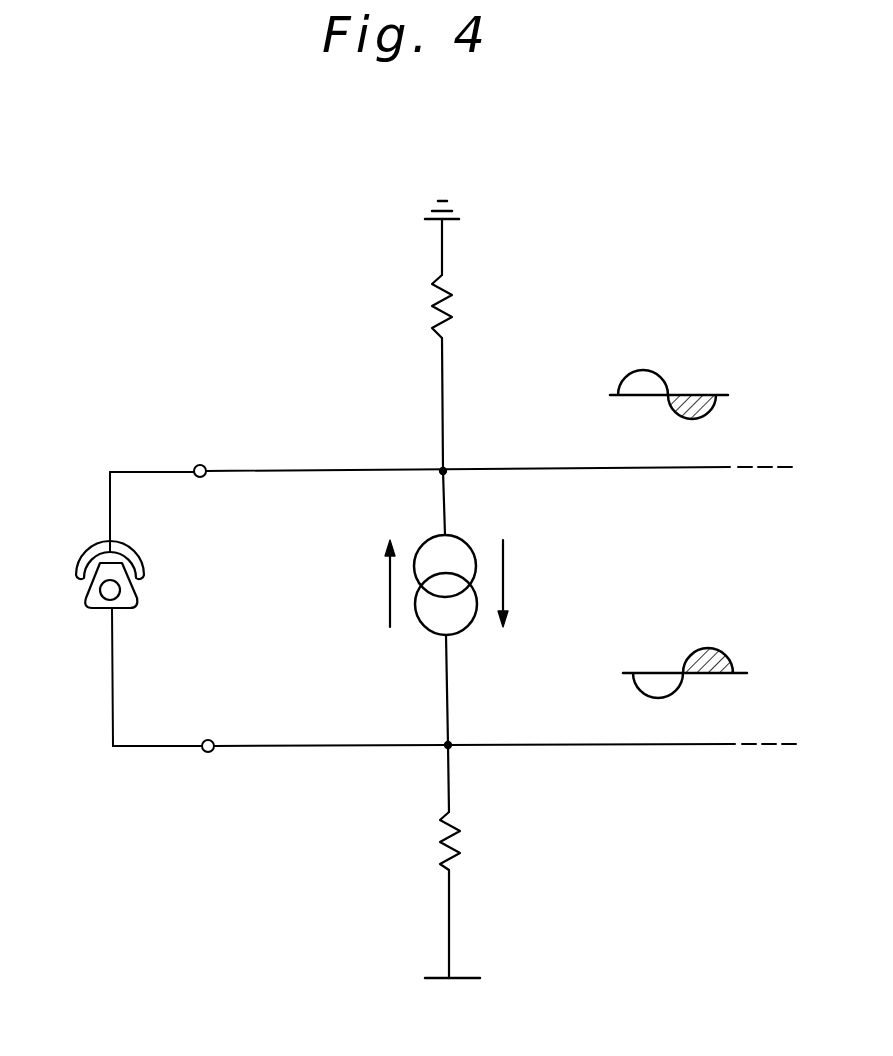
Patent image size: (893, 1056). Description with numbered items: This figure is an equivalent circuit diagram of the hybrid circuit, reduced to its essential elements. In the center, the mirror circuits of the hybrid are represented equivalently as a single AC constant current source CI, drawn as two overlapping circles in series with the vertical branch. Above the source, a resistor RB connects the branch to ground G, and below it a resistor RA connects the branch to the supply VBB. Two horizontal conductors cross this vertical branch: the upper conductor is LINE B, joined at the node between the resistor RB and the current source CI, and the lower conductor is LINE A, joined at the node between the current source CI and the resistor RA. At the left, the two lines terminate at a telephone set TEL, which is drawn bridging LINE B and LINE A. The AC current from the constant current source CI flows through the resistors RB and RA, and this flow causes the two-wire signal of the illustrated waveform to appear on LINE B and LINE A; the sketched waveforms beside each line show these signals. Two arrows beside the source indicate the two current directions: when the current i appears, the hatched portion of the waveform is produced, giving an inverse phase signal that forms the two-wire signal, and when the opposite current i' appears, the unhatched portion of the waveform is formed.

The ground G is at (453, 217).
The resistor R_B RB is at (437, 313).
The resistor R_A RA is at (440, 846).
The battery voltage supply VBB is at (452, 995).
The AC constant current source CI is at (460, 536).
The current i is at (520, 583).
The current i' is at (367, 583).
The line B LINE B is at (148, 470).
The line A LINE A is at (160, 748).
The telephone set TEL is at (92, 602).